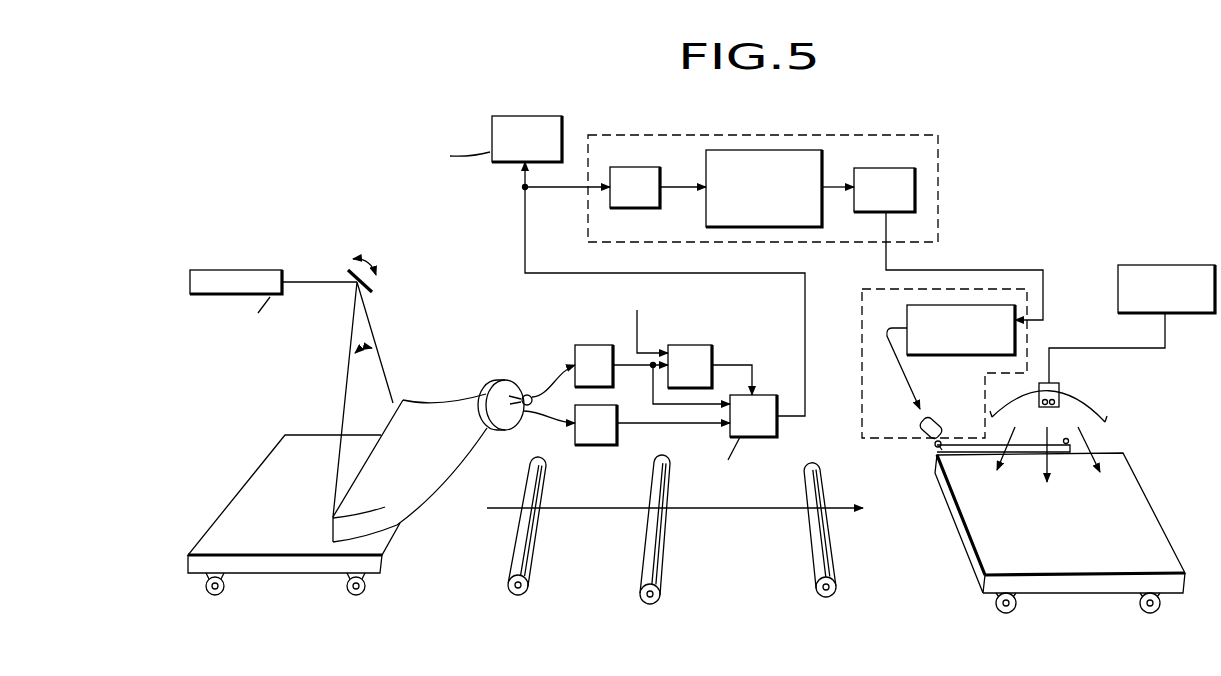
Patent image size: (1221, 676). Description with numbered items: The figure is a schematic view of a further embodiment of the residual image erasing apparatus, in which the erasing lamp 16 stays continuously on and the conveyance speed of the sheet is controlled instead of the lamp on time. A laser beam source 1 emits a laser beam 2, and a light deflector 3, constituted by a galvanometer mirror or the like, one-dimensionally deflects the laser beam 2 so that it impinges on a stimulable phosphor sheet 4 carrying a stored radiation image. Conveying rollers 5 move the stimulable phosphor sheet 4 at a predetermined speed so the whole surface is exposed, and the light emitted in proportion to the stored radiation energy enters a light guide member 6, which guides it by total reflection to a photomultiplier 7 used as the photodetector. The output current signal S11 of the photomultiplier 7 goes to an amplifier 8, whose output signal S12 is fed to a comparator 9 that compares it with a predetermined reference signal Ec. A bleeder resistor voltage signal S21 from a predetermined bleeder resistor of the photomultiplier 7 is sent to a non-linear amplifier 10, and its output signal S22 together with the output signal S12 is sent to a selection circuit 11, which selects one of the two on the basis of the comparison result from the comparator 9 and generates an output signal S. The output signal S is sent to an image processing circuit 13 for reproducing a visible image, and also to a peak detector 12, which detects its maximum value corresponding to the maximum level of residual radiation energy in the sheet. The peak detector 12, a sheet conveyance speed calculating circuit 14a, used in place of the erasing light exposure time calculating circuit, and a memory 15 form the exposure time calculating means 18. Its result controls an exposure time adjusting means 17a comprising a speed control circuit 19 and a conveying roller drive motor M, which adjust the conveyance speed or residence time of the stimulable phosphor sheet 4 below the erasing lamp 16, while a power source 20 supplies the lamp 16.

The laser beam source 1 is at (228, 271).
The laser beam 2 is at (302, 282).
The light deflector 3 is at (352, 269).
The stimulable phosphor sheet 4 is at (240, 498).
The conveying rollers 5 is at (224, 592).
The light guide member 6 is at (440, 418).
The photomultiplier 7 is at (497, 383).
The amplifier 8 is at (590, 345).
The comparator 9 is at (698, 345).
The non-linear amplifier 10 is at (602, 446).
The selection circuit 11 is at (763, 438).
The peak detector 12 is at (634, 167).
The image processing circuit 13 is at (527, 116).
The sheet conveyance speed calculating circuit 14a is at (790, 150).
The memory 15 is at (885, 168).
The erasing lamp 16 is at (1100, 417).
The exposure time adjusting means 17a is at (862, 414).
The exposure time calculating means 18 is at (938, 148).
The speed control circuit 19 is at (965, 355).
The power source 20 is at (1195, 265).
The conveying roller drive motor M is at (921, 434).
The output signal S is at (674, 289).
The reference signal Ec is at (645, 320).
The output current signal S11 is at (551, 373).
The output signal of the amplifier S12 is at (671, 384).
The bleeder resistor voltage signal S21 is at (549, 430).
The output signal of the non-linear amplifier S22 is at (673, 439).